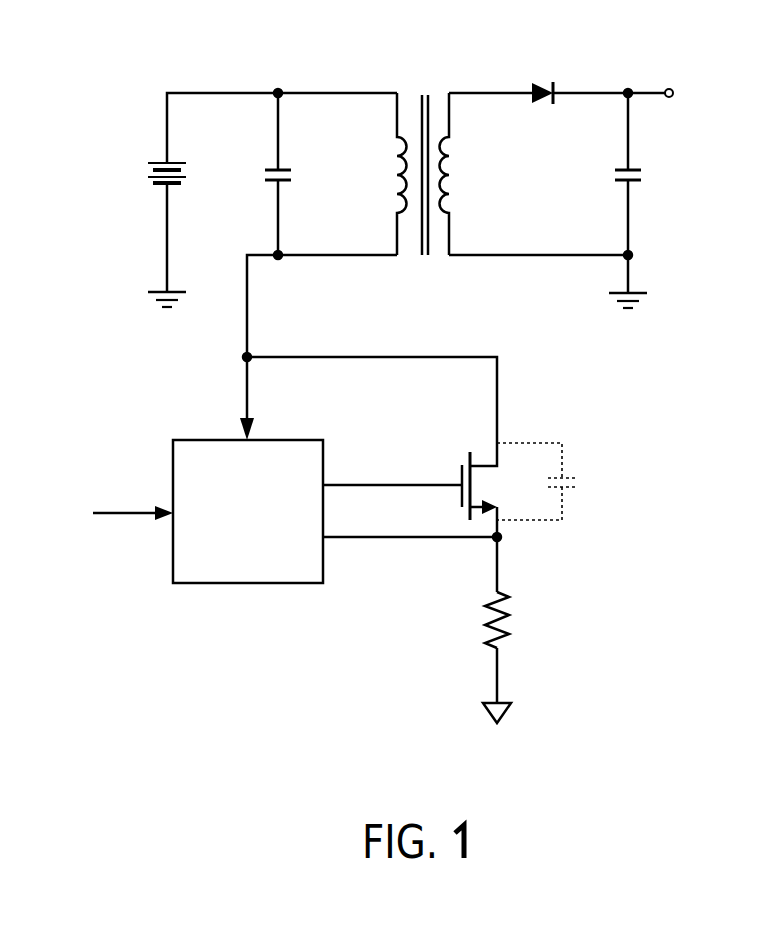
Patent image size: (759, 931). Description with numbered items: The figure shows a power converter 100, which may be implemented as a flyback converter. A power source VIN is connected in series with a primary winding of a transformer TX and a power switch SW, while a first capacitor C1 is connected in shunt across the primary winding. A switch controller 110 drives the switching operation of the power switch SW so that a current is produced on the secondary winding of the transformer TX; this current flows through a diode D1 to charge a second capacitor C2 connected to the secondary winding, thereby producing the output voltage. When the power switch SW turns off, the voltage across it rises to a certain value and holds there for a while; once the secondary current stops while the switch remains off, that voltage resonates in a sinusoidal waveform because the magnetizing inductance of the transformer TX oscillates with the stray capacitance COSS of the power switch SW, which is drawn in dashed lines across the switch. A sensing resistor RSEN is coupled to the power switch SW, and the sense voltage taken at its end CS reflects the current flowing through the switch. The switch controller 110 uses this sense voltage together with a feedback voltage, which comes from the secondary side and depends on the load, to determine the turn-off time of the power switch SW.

The power converter 100 is at (752, 32).
The switch controller 110 is at (172, 446).
The first capacitor C1 is at (263, 174).
The second capacitor C2 is at (612, 174).
The diode D1 is at (543, 79).
The transformer TX is at (424, 158).
The power switch SW is at (410, 486).
The stray capacitance COSS is at (563, 481).
The sensing resistor RSEN is at (524, 620).
The power source VIN is at (144, 170).